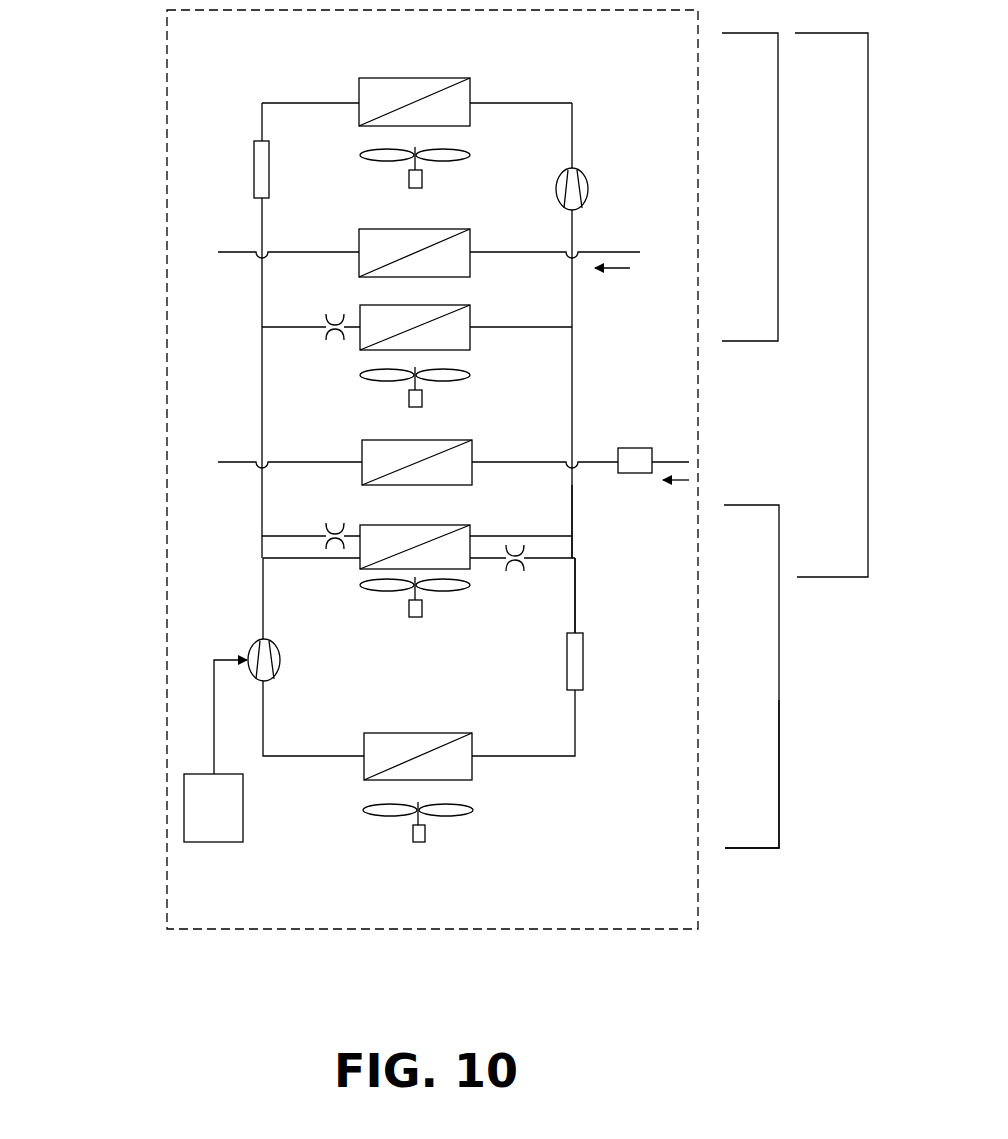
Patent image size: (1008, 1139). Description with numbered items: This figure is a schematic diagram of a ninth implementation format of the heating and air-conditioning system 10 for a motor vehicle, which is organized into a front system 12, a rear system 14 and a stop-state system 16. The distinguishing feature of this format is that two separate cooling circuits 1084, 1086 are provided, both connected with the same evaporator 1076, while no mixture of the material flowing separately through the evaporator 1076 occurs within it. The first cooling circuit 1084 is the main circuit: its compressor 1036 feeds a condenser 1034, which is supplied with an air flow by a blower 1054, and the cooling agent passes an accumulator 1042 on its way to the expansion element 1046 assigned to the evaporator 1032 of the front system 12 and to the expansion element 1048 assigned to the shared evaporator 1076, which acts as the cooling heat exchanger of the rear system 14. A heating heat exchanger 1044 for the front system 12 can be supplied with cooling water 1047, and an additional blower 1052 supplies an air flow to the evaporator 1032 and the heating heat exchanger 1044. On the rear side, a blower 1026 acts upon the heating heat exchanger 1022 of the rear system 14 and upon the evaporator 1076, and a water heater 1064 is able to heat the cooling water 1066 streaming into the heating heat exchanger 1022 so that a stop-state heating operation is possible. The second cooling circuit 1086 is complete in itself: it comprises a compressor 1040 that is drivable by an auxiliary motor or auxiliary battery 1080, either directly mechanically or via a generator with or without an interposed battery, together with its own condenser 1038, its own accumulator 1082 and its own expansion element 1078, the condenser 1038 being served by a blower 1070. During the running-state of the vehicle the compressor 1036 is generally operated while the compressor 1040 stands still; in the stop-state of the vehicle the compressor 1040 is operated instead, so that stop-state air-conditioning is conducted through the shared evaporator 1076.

The heating and air-conditioning system 10 is at (134, 103).
The front system 12 is at (778, 252).
The rear system 14 is at (868, 550).
The stop-state system 16 is at (779, 780).
The heating heat exchanger of the rear system 1022 is at (472, 452).
The blower 1026 is at (422, 610).
The evaporator of the front system 1032 is at (470, 318).
The condenser 1034 is at (428, 78).
The compressor 1036 is at (590, 190).
The condenser 1038 is at (472, 740).
The compressor 1040 is at (280, 660).
The accumulator 1042 is at (254, 172).
The heating heat exchanger for the front system 1044 is at (380, 229).
The expansion element 1046 is at (335, 343).
The cooling water 1047 is at (617, 268).
The expansion element 1048 is at (336, 522).
The blower 1052 is at (422, 397).
The blower 1054 is at (422, 182).
The water heater 1064 is at (630, 448).
The cooling water 1066 is at (682, 480).
The blower 1070 is at (425, 833).
The evaporator 1076 is at (470, 528).
The expansion element 1078 is at (515, 572).
The auxiliary motor or auxiliary battery 1080 is at (225, 842).
The accumulator 1082 is at (583, 665).
The cooling circuit 1084 is at (575, 498).
The cooling circuit 1086 is at (575, 590).